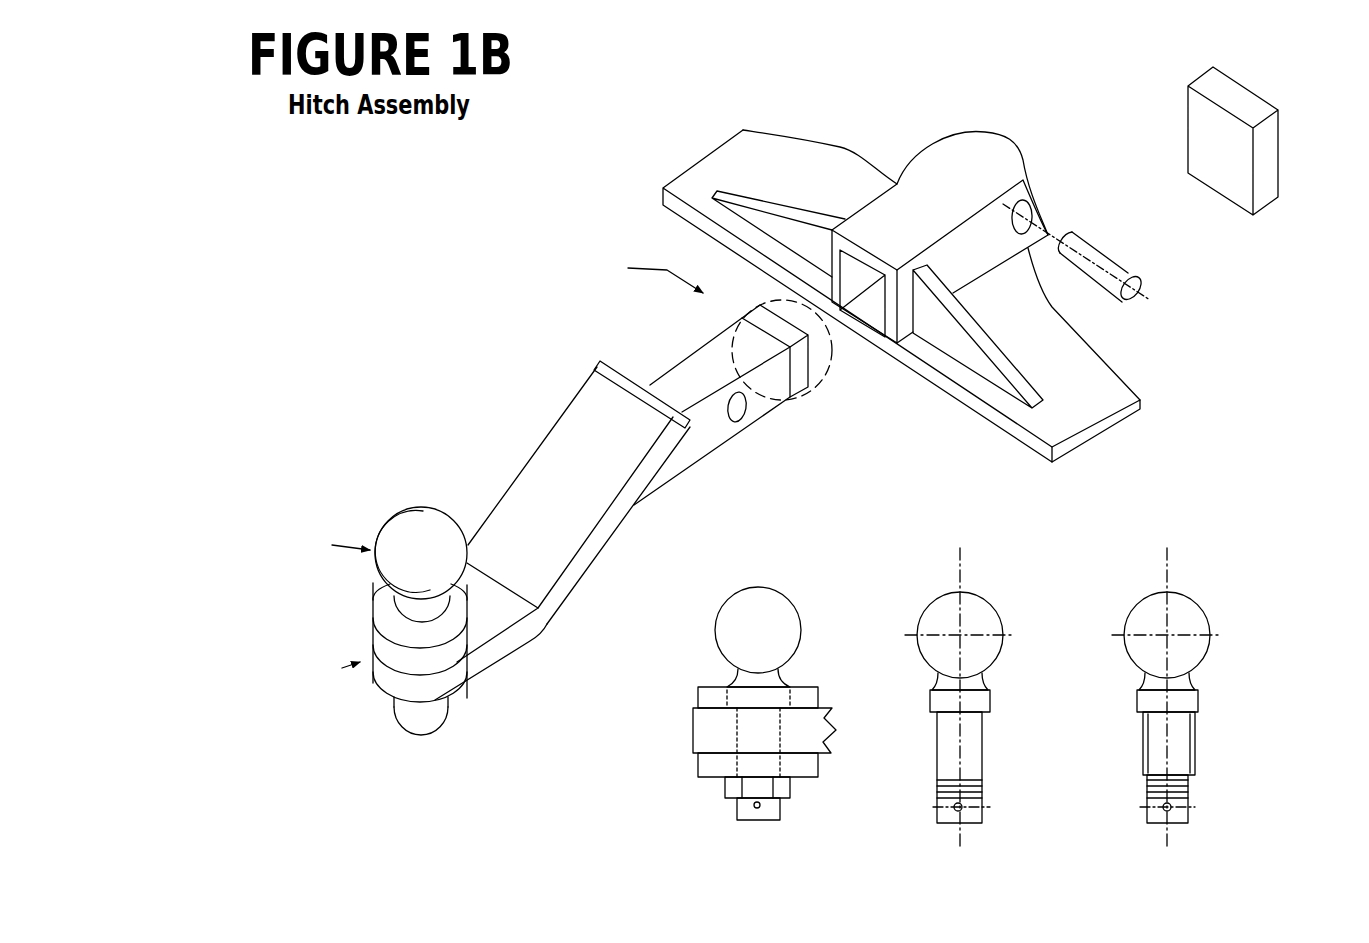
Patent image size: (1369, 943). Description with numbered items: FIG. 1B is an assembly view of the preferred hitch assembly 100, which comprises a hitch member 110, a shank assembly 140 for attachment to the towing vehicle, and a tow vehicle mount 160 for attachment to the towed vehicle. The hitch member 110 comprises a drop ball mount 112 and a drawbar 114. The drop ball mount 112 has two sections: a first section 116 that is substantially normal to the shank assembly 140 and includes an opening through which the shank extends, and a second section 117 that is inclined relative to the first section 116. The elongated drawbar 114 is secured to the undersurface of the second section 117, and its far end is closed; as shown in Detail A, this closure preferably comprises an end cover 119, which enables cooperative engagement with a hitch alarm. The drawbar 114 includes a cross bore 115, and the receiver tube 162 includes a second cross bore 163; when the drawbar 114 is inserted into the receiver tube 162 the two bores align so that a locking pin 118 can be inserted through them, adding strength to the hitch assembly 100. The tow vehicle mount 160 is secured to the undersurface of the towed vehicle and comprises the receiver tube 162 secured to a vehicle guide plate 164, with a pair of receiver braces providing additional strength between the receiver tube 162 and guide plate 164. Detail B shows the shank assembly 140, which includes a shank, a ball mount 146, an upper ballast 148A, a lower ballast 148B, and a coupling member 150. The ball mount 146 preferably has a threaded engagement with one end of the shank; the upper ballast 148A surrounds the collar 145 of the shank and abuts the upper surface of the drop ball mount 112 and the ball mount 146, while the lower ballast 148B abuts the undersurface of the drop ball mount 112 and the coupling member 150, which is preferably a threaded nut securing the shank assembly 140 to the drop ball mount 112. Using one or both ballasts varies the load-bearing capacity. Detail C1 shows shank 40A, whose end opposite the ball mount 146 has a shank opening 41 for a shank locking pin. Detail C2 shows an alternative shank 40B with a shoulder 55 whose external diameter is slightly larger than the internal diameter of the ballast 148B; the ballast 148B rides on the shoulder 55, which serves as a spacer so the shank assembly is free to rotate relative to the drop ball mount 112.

The hitch assembly 100 is at (580, 220).
The hitch member 110 is at (540, 413).
The drop ball mount 112 is at (527, 477).
The drawbar 114 is at (655, 483).
The cross bore 115 is at (727, 410).
The first section 116 is at (517, 605).
The second section 117 is at (595, 388).
The locking pin 118 is at (1128, 302).
The end cover 119 is at (757, 304).
The shank assembly 140 is at (367, 727).
The collar 145 is at (755, 695).
The ball mount 146 is at (437, 522).
The upper ballast 148A is at (393, 642).
The lower ballast 148B is at (388, 692).
The coupling member 150 is at (730, 780).
The shank opening 41 is at (755, 807).
The shank 40A is at (970, 740).
The shank 40B is at (1178, 740).
The shoulder 55 is at (1195, 760).
The tow vehicle mount 160 is at (1093, 453).
The receiver tube 162 is at (867, 313).
The cross bore 163 is at (1027, 213).
The guide plate 164 is at (823, 133).